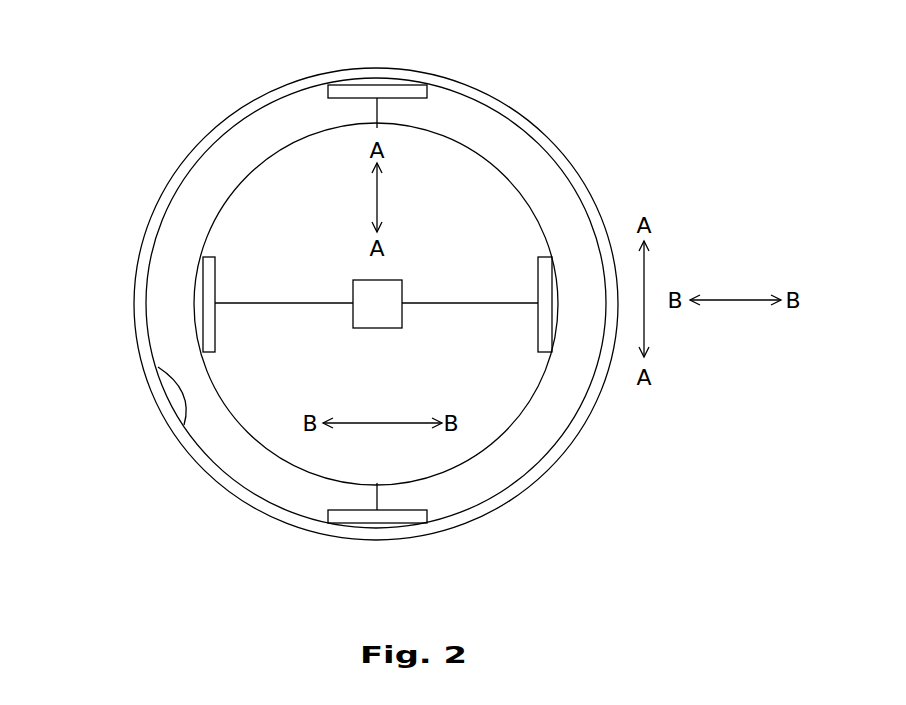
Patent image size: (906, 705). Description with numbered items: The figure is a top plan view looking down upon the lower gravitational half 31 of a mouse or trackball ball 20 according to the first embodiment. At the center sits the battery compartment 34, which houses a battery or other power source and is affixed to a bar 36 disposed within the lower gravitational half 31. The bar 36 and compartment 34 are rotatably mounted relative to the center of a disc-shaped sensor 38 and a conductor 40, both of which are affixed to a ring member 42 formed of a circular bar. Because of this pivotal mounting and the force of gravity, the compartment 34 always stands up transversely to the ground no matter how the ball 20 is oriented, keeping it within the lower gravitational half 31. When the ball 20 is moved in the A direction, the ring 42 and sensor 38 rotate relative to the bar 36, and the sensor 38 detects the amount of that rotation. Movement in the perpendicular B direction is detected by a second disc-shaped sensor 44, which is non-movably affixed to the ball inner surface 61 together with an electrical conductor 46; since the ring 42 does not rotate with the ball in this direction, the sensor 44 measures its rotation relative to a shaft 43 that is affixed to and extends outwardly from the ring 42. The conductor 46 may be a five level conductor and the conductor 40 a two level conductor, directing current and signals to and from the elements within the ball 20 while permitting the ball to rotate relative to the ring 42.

The ball 20 is at (608, 103).
The lower gravitational half 31 is at (159, 65).
The battery compartment 34 is at (362, 293).
The bar 36 is at (260, 305).
The sensor 38 is at (210, 260).
The conductor 40 is at (546, 257).
The ring member 42 is at (467, 148).
The shaft 43 is at (377, 110).
The sensor 44 is at (347, 90).
The electrical conductor 46 is at (382, 515).
The ball inner surface 61 is at (184, 425).